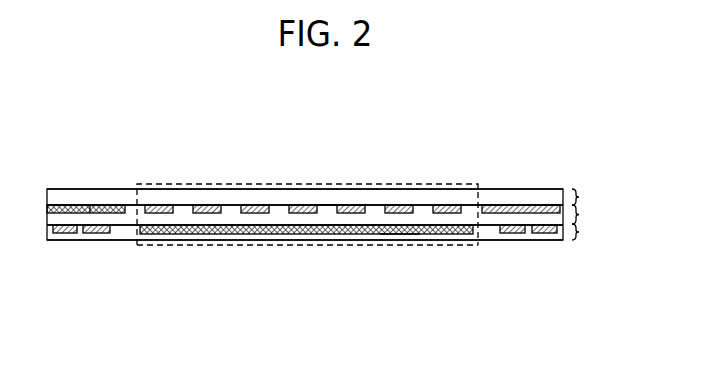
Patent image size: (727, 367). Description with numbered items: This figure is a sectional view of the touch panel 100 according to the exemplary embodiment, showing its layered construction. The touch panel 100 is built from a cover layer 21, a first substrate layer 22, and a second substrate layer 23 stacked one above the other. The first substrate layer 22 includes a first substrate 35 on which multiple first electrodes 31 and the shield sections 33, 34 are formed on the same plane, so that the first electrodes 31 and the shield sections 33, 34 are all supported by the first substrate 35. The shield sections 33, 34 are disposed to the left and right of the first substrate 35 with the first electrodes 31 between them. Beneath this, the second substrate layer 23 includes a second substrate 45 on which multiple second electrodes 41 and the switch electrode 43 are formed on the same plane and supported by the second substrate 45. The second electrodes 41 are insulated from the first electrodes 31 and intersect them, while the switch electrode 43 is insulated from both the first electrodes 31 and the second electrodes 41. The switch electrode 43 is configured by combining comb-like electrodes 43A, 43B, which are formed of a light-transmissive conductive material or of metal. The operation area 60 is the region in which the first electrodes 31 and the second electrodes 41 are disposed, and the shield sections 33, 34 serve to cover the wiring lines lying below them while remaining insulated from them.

The touch panel 100 is at (453, 162).
The cover layer 21 is at (579, 197).
The first substrate layer 22 is at (579, 214).
The second substrate layer 23 is at (579, 232).
The first electrodes 31 is at (407, 207).
The shield section 33 is at (115, 207).
The shield section 34 is at (503, 207).
The first substrate 35 is at (327, 213).
The second electrodes 41 is at (392, 234).
The switch electrode 43 is at (529, 285).
The comb-like electrode 43A is at (559, 265).
The comb-like electrode 43B is at (513, 233).
The second substrate 45 is at (309, 234).
The operation area 60 is at (175, 244).